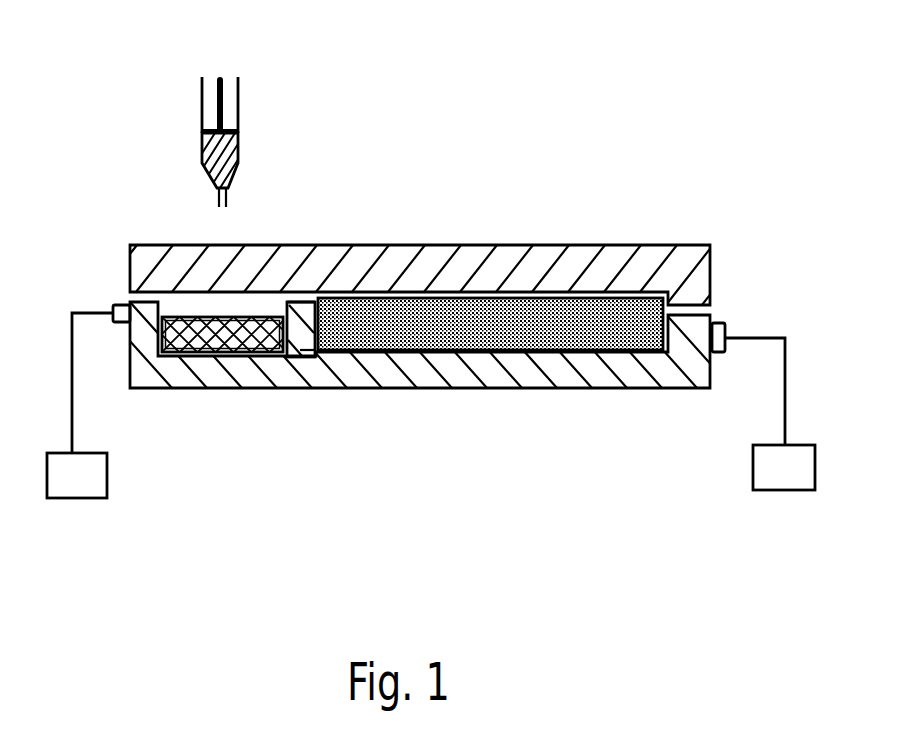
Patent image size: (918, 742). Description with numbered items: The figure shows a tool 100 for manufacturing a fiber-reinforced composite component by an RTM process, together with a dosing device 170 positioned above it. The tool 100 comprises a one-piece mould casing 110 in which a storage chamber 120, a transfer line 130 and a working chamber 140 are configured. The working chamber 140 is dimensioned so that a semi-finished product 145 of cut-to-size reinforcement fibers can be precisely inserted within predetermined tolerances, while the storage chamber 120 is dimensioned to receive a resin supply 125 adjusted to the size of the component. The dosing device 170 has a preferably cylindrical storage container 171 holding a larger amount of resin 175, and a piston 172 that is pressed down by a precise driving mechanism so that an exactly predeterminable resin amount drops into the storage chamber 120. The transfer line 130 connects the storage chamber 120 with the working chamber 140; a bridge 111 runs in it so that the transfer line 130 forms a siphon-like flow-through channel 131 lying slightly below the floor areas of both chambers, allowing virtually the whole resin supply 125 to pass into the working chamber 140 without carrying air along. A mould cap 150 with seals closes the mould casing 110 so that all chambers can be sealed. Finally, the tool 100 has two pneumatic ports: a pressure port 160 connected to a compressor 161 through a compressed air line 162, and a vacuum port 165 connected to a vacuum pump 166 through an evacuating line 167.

The tool 100 is at (699, 88).
The mould casing 110 is at (711, 373).
The bridge 111 is at (300, 302).
The storage chamber 120 is at (285, 392).
The resin supply 125 is at (213, 317).
The transfer line 130 is at (318, 392).
The flow-through channel 131 is at (279, 357).
The working chamber 140 is at (665, 392).
The semi-finished product 145 is at (497, 300).
The mould cap 150 is at (711, 262).
The pressure port 160 is at (114, 303).
The compressor 161 is at (108, 480).
The compressed air line 162 is at (73, 415).
The vacuum port 165 is at (718, 324).
The vacuum pump 166 is at (753, 470).
The evacuating line 167 is at (785, 418).
The dosing device 170 is at (225, 116).
The storage container 171 is at (240, 115).
The piston 172 is at (220, 78).
The resin 175 is at (242, 162).